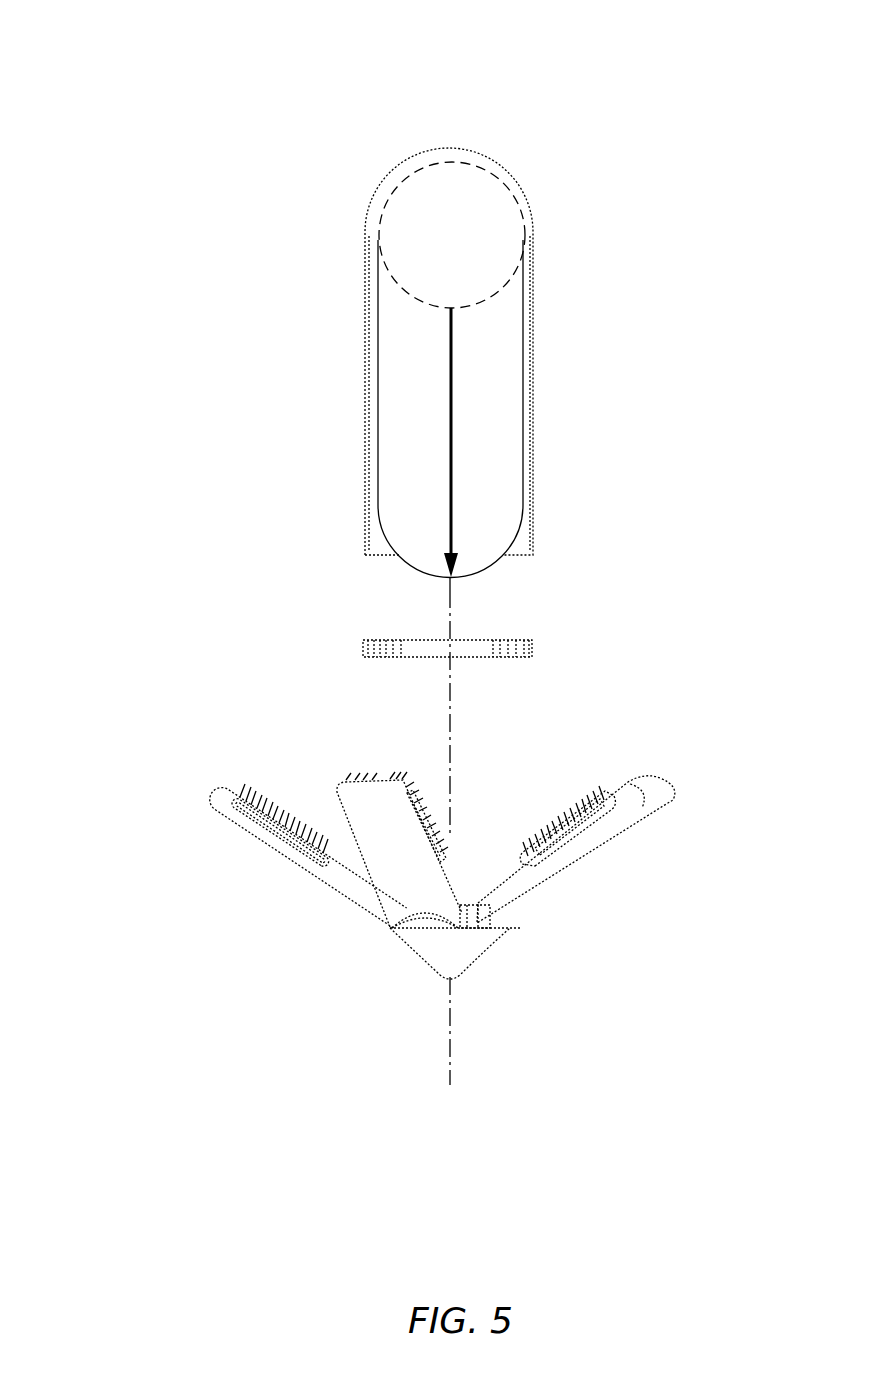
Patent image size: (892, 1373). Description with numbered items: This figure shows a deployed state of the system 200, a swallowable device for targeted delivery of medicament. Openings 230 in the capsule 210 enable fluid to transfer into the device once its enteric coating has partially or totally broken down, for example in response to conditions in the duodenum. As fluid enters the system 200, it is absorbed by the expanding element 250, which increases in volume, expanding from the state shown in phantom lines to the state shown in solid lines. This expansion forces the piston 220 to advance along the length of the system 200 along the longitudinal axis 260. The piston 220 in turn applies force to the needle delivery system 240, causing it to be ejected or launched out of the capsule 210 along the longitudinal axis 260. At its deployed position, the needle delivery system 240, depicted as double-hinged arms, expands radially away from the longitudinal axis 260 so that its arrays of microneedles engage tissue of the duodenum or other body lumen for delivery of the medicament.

The system 200 is at (165, 67).
The capsule 210 is at (530, 397).
The piston 220 is at (507, 655).
The openings 230 is at (527, 243).
The needle delivery system 240 is at (467, 963).
The expanding element 250 is at (395, 397).
The longitudinal axis 260 is at (450, 705).